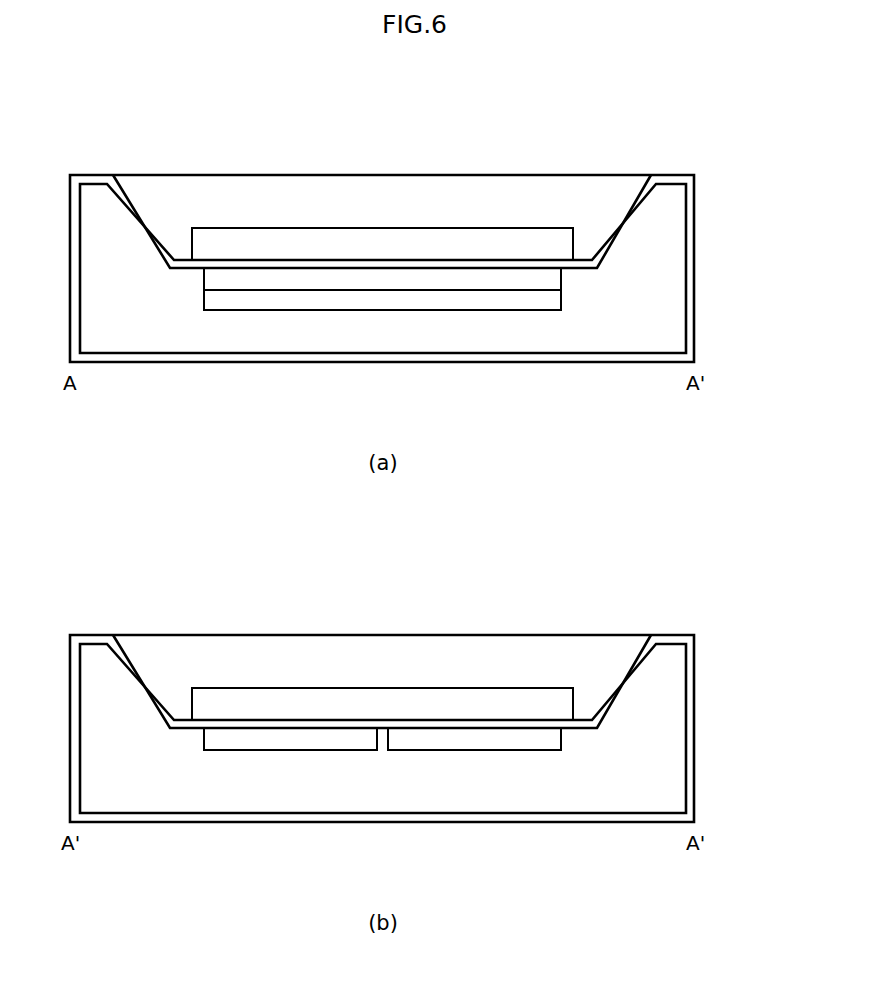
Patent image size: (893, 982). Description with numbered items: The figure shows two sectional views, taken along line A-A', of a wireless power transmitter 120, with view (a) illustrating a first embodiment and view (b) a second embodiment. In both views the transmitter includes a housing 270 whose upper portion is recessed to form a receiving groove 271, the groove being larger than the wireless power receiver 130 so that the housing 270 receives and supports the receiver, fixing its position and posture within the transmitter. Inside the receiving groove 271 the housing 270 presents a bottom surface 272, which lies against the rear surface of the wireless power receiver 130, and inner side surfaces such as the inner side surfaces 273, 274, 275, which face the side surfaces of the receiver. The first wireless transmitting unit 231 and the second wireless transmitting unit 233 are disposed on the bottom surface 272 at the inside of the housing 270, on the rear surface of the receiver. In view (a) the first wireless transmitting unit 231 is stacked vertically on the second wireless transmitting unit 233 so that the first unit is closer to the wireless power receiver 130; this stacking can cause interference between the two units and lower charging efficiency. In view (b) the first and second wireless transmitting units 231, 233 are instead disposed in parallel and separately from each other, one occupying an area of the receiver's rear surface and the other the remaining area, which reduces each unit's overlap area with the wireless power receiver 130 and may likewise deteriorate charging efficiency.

The wireless power transmitter 120 is at (662, 153).
The wireless power receiver 130 is at (287, 238).
The first wireless transmitting unit 231 is at (457, 280).
The second wireless transmitting unit 233 is at (417, 302).
The housing 270 is at (678, 238).
The receiving groove 271 is at (358, 195).
The bottom surface 272 is at (367, 257).
The inner side surface 273 is at (597, 240).
The inner side surface 274 is at (505, 185).
The inner side surface 275 is at (163, 239).